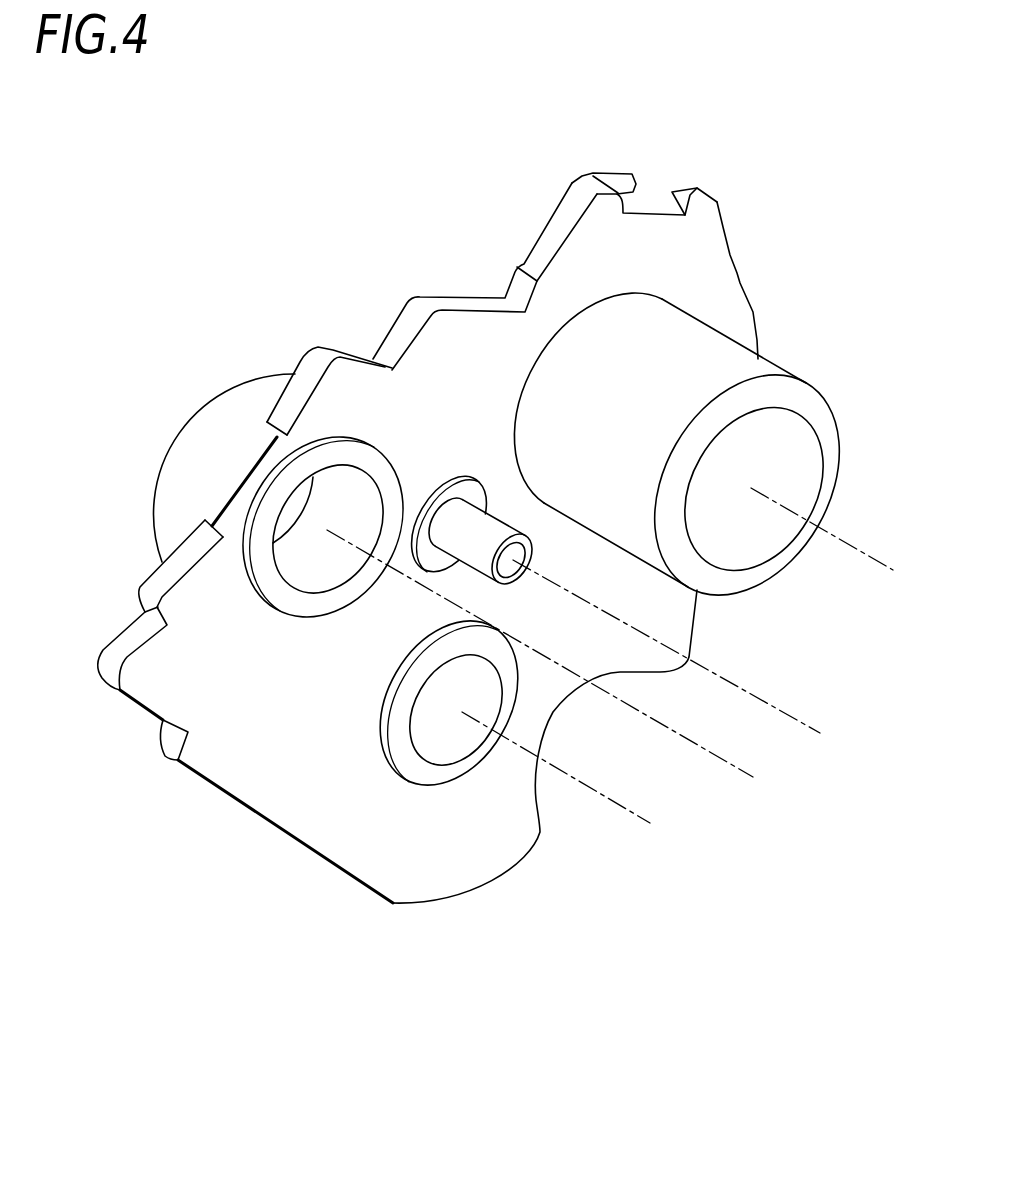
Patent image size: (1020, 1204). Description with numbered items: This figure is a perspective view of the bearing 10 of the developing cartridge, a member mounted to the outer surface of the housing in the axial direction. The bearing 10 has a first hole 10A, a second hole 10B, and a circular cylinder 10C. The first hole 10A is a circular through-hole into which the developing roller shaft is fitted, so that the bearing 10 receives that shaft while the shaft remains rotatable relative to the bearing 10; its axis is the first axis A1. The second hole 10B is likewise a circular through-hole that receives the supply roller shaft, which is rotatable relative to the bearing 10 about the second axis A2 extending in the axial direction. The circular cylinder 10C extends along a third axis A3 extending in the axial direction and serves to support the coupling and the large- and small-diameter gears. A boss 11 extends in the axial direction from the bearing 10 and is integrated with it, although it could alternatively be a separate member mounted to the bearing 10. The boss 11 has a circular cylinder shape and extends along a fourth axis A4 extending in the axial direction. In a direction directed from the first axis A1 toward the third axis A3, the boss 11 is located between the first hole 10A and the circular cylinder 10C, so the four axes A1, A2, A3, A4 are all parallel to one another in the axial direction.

The bearing 10 is at (426, 1062).
The first hole 10A is at (303, 578).
The second hole 10B is at (461, 740).
The circular cylinder 10C is at (700, 360).
The boss 11 is at (472, 520).
The first axis A1 is at (717, 748).
The second axis A2 is at (623, 801).
The third axis A3 is at (863, 549).
The fourth axis A4 is at (783, 706).